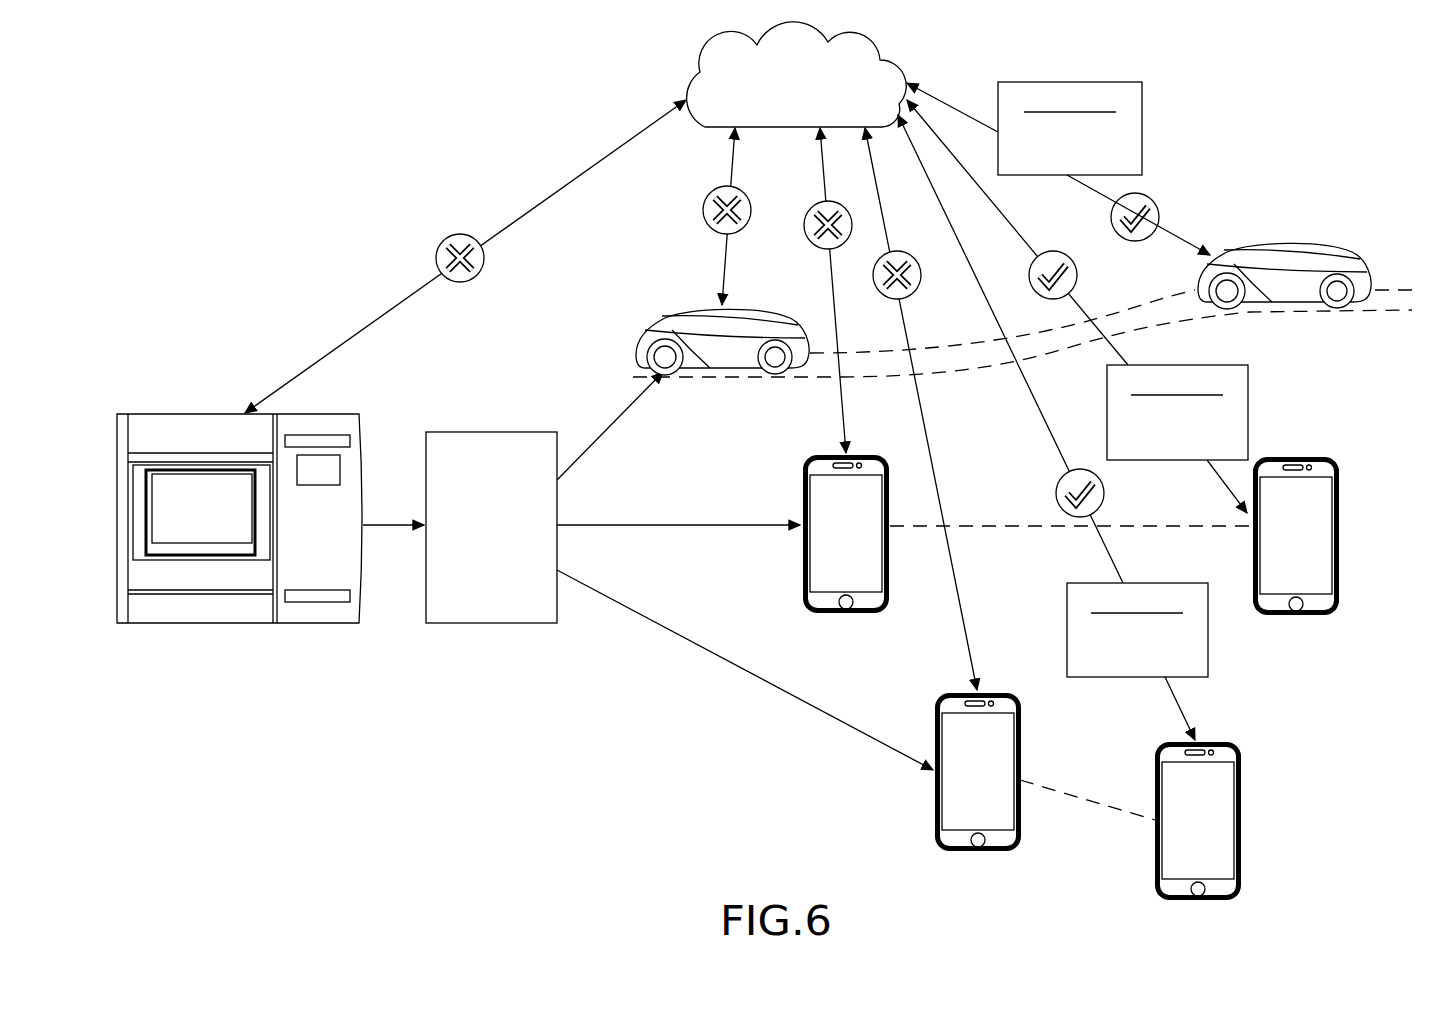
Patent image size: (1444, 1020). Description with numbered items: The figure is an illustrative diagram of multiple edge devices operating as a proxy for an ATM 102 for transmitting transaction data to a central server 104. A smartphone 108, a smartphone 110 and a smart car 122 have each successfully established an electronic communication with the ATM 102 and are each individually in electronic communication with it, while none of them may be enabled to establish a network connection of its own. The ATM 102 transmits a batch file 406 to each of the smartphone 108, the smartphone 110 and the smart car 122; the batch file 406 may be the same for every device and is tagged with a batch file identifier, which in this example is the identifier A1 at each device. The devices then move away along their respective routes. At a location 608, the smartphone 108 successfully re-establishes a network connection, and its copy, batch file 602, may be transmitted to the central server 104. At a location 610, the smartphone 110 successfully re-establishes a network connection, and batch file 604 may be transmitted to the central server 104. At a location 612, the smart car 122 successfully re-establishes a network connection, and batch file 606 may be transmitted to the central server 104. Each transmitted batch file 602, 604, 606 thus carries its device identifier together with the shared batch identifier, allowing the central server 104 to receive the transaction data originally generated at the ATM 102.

The ATM 102 is at (230, 413).
The central server 104 is at (898, 70).
The smartphone 108 is at (955, 693).
The smartphone 110 is at (830, 455).
The smart car 122 is at (685, 310).
The batch file 406 is at (485, 432).
The batch file 602 is at (1208, 648).
The batch file 604 is at (1248, 430).
The batch file 606 is at (1142, 140).
The location 608 is at (1057, 488).
The location 610 is at (1077, 275).
The location 612 is at (1158, 210).